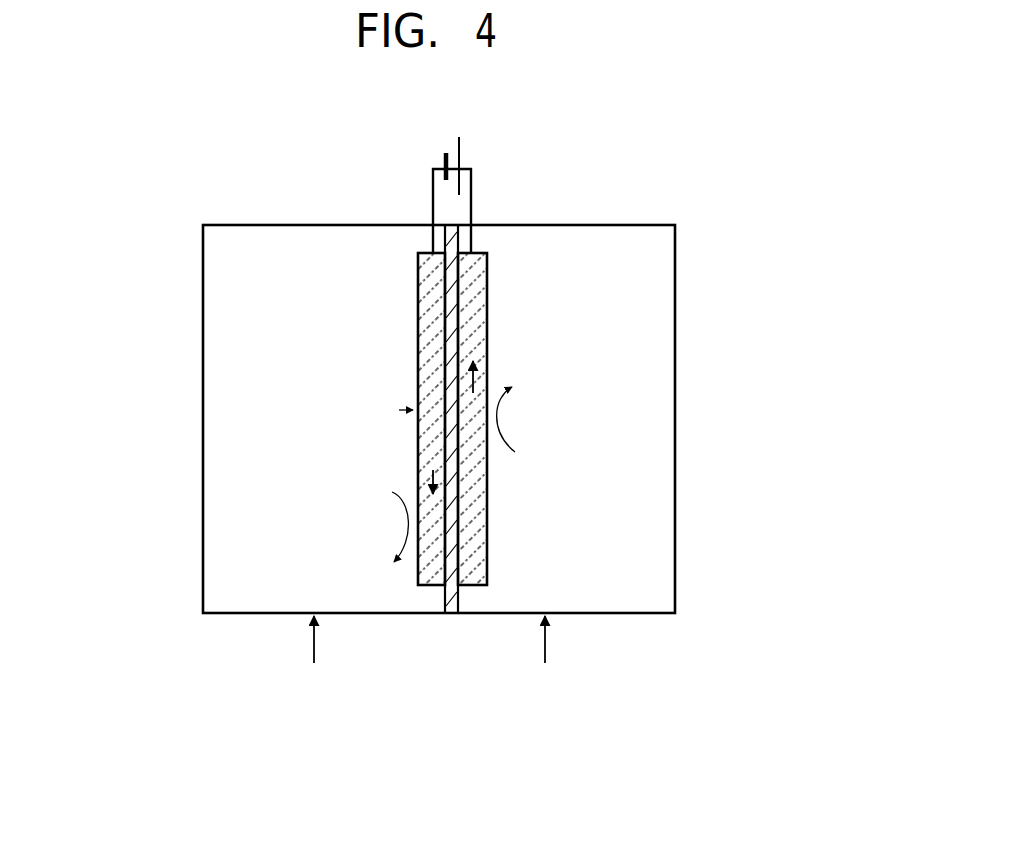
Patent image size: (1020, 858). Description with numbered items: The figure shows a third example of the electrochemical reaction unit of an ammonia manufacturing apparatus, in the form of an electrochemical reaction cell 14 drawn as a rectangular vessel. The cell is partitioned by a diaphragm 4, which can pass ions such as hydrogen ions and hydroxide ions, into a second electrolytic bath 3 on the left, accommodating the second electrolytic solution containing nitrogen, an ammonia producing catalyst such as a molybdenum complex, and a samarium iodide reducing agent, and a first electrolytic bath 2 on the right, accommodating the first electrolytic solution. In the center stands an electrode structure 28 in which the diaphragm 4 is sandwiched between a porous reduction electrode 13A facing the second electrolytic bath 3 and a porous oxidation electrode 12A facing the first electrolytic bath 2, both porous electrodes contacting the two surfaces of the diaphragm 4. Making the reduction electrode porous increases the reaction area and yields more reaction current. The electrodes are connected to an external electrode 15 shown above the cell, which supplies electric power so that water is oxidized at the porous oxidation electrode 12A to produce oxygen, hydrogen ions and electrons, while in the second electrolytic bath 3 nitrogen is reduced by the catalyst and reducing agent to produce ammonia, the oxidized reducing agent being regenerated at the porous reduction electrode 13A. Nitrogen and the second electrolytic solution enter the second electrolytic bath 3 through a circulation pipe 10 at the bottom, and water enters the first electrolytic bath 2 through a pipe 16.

The first electrolytic bath 2 is at (640, 263).
The second electrolytic bath 3 is at (240, 277).
The diaphragm 4 is at (452, 453).
The circulation pipe 10 is at (310, 648).
The porous oxidation electrode 12A is at (472, 586).
The porous reduction electrode 13A is at (430, 586).
The electrochemical reaction cell 14 is at (603, 206).
The external electrode 15 is at (460, 157).
The pipe 16 is at (548, 640).
The electrode structure 28 is at (454, 476).